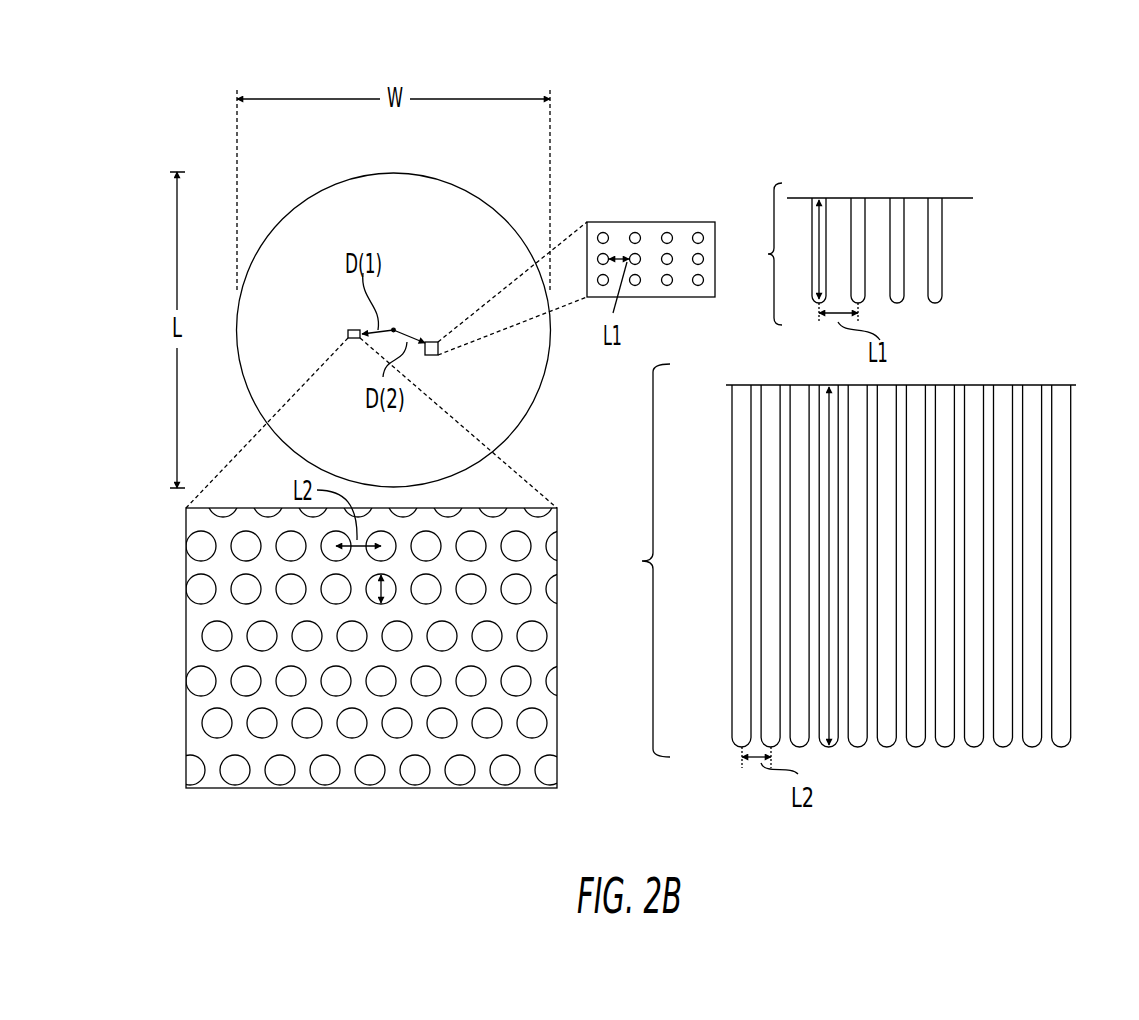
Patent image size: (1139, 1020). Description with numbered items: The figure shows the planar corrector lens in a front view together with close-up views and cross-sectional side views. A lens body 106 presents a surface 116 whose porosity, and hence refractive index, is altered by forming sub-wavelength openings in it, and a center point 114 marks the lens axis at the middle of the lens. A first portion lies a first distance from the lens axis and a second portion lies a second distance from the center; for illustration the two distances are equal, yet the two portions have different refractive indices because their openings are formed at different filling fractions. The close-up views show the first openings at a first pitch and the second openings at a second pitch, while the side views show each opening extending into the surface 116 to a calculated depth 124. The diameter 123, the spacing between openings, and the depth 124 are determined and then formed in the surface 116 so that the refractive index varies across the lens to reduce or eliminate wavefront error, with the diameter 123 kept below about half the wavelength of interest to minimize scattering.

The membrane 106 is at (407, 173).
The center point 114 is at (397, 292).
The surface 116 is at (310, 227).
The diameter 123 is at (390, 589).
The depth 124 is at (1003, 747).